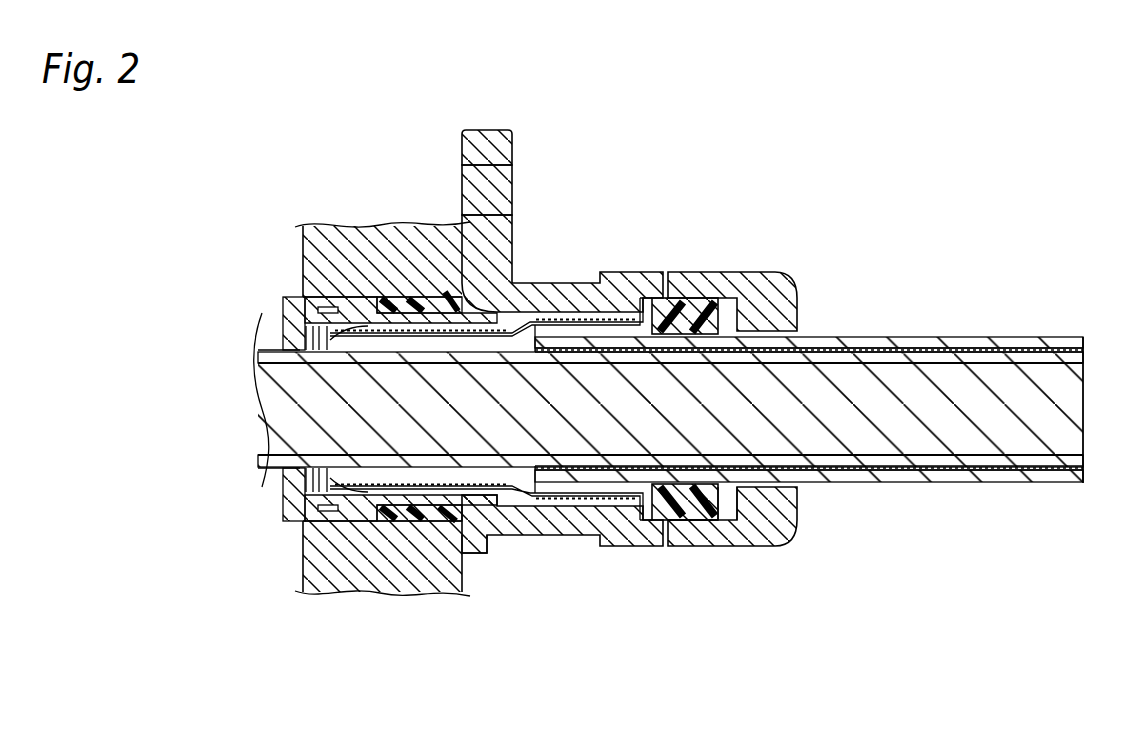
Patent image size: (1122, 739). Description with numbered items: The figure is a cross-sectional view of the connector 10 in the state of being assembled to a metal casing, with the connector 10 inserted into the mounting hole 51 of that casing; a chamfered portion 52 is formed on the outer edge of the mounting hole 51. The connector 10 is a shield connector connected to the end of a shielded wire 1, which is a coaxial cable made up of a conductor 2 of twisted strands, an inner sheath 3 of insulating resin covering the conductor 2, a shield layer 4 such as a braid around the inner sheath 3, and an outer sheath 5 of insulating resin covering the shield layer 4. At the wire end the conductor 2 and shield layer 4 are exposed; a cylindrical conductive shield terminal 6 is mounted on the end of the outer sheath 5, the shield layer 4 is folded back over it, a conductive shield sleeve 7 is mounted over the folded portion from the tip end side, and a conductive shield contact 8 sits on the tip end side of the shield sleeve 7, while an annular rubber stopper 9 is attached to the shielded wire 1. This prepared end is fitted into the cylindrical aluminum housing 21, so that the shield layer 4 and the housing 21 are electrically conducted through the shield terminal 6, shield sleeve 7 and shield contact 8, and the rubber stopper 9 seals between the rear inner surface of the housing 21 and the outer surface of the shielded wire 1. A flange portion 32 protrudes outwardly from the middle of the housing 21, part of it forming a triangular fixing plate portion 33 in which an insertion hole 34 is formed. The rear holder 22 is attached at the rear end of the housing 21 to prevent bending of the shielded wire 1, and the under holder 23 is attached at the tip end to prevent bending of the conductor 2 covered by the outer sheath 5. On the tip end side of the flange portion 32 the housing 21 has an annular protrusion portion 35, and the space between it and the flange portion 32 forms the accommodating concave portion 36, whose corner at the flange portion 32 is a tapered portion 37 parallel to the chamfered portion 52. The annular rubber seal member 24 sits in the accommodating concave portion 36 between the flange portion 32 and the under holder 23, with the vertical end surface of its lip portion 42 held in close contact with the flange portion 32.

The shielded wire 1 is at (921, 332).
The conductor 2 is at (275, 407).
The inner sheath 3 is at (266, 344).
The shield layer 4 is at (997, 347).
The outer sheath 5 is at (1076, 338).
The shield terminal 6 is at (648, 335).
The shield sleeve 7 is at (520, 493).
The shield contact 8 is at (372, 492).
The rubber stopper 9 is at (683, 512).
The connector 10 is at (710, 90).
The housing 21 is at (560, 278).
The rear holder 22 is at (795, 270).
The under holder 23 is at (283, 293).
The seal member 24 is at (393, 290).
The flange portion 32 is at (478, 555).
The fixing plate portion 33 is at (512, 130).
The insertion hole 34 is at (514, 173).
The annular protrusion portion 35 is at (392, 517).
The accommodating concave portion 36 is at (415, 517).
The tapered portion 37 is at (425, 250).
The lip portion 42 is at (452, 522).
The mounting hole 51 is at (300, 510).
The chamfered portion 52 is at (467, 295).